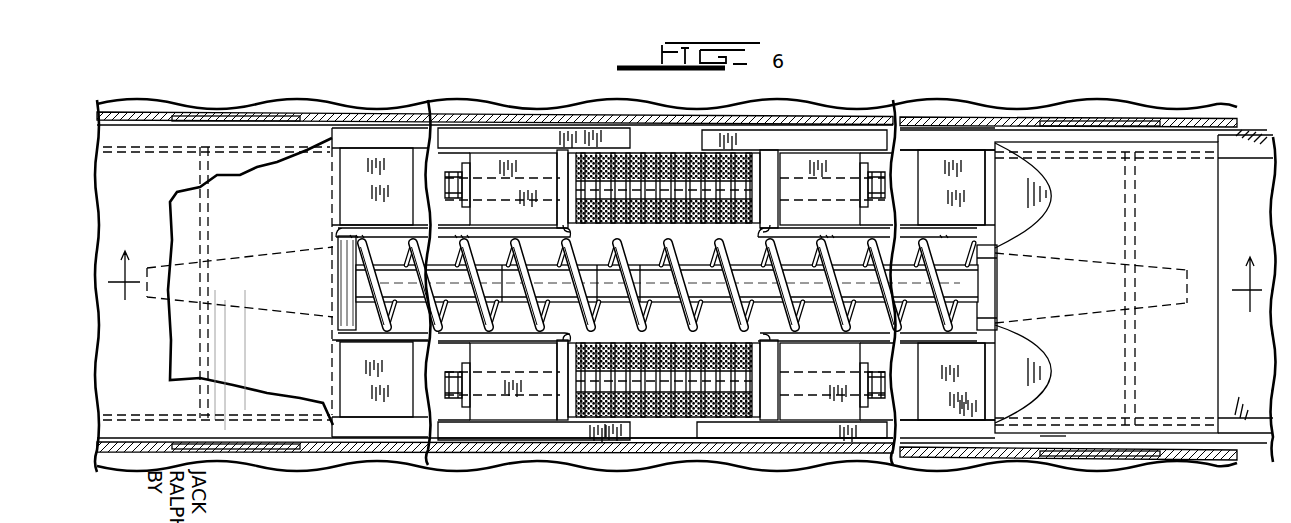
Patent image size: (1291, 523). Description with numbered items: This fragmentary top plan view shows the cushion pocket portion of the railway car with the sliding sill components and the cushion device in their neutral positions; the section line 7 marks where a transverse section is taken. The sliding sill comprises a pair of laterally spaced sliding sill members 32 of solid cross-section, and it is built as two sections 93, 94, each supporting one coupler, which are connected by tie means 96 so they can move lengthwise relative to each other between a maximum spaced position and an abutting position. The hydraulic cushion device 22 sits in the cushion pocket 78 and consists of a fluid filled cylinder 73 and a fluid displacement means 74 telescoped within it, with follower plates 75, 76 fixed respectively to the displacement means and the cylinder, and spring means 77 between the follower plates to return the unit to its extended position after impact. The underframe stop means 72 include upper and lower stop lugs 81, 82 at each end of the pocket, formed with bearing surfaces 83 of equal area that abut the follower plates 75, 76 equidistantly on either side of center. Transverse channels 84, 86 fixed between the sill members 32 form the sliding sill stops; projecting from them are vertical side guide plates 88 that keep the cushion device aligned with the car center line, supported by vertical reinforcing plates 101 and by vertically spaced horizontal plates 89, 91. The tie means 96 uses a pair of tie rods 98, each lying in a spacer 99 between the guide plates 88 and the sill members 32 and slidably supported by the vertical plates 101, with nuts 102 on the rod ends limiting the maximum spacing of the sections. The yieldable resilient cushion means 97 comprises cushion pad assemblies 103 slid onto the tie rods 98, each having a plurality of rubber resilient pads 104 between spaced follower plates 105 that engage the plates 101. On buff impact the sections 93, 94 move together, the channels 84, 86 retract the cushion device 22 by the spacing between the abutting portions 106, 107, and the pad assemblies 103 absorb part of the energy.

The section line 7- 7 is at (685, 284).
The cushion device 22 is at (708, 522).
The sliding sill members 32 is at (597, 138).
The underframe stop means 72 is at (320, 328).
The fluid filled cylinder 73 is at (818, 288).
The fluid displacement means 74 is at (457, 282).
The follower plate 75 is at (343, 268).
The follower plate 76 is at (995, 270).
The spring means 77 is at (645, 341).
The cushion pocket 78 is at (952, 441).
The upper stop lug 81 is at (217, 427).
The lower stop lug 82 is at (238, 300).
The bearing surfaces 83 is at (996, 293).
The transverse channel 84 is at (268, 383).
The transverse channel 86 is at (1053, 418).
The side guide plates 88 is at (502, 231).
The horizontal reinforcing plates 89 is at (838, 163).
The horizontal plates 91 is at (395, 160).
The sliding sill section 93 is at (562, 114).
The sliding sill section 94 is at (897, 112).
The tie means 96 is at (755, 178).
The yieldable resilient cushion means 97 is at (650, 155).
The tie rods 98 is at (698, 224).
The spacers 99 is at (880, 408).
The vertical reinforcing plates 101 is at (472, 169).
The nuts 102 is at (457, 368).
The cushion pad assemblies 103 is at (683, 158).
The resilient pads 104 is at (665, 223).
The follower plates 105 is at (563, 218).
The abutting end 106 is at (622, 127).
The abutting end 107 is at (720, 141).